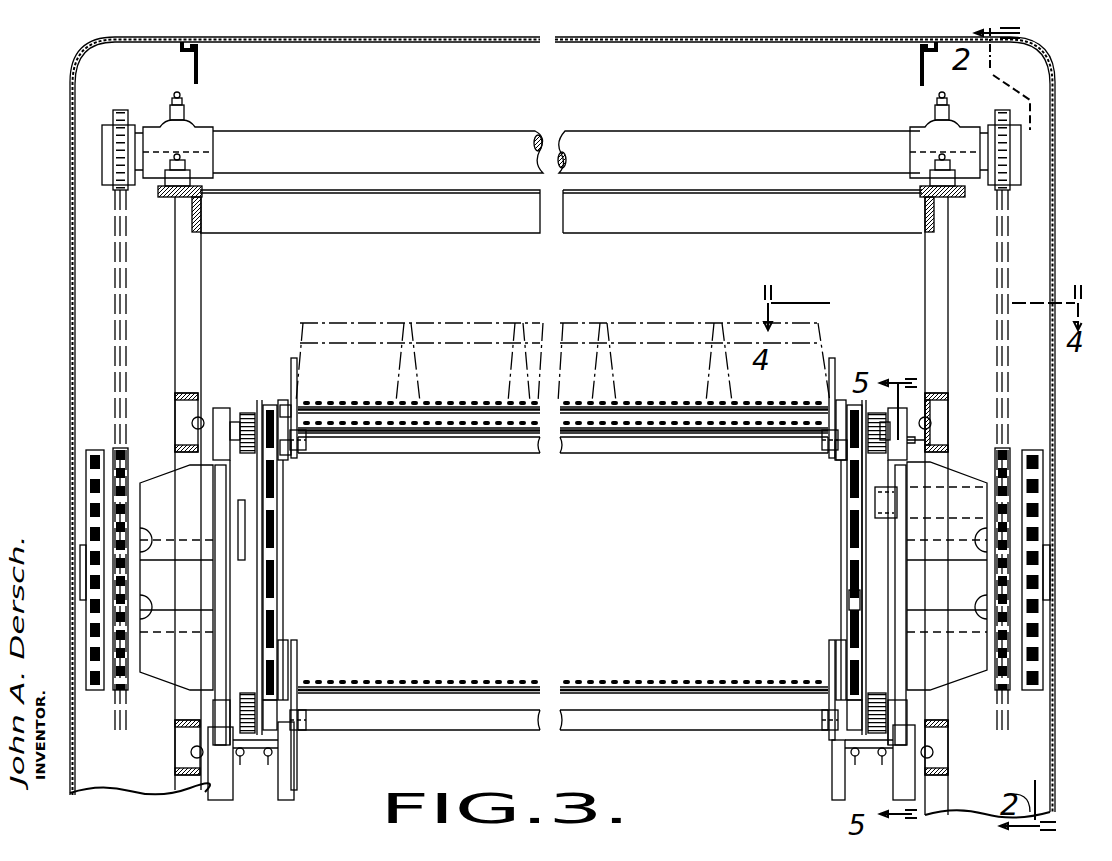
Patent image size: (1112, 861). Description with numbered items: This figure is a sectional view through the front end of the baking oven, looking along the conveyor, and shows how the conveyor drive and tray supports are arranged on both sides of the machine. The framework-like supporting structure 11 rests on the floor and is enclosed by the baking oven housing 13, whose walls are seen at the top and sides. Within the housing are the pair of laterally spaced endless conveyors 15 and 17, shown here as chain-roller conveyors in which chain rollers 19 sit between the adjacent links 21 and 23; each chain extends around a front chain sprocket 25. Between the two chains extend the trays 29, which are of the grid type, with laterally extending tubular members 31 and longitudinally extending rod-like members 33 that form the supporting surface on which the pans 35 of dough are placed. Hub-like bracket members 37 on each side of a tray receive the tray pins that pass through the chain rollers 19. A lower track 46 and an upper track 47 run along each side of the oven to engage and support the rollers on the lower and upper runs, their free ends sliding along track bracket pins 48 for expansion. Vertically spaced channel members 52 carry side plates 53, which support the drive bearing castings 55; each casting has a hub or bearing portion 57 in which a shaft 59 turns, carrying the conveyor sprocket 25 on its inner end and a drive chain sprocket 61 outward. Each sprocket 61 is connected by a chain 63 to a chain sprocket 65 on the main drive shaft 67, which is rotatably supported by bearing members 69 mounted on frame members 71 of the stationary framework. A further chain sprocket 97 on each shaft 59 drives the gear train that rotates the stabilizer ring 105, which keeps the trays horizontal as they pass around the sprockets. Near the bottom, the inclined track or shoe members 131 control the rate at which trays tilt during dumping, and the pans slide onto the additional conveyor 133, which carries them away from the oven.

The supporting structure 11 is at (170, 796).
The baking oven housing 13 is at (68, 209).
The endless conveyor 15 is at (283, 520).
The endless conveyor 17 is at (839, 565).
The chain roller 19 is at (265, 568).
The link 21 is at (275, 548).
The link 23 is at (270, 602).
The chain sprocket 25 is at (270, 620).
The tray 29 is at (452, 459).
The tubular member 31 is at (322, 443).
The rod-like member 33 is at (330, 402).
The pan 35 is at (300, 333).
The hub-like bracket member 37 is at (292, 452).
The lower track 46 is at (248, 770).
The upper track 47 is at (920, 437).
The track bracket pin 48 is at (275, 757).
The channel member 52 is at (185, 395).
The side plate 53 is at (200, 320).
The drive bearing supporting casting 55 is at (167, 689).
The hub or bearing portion 57 is at (947, 576).
The shaft 59 is at (843, 602).
The drive chain sprocket 61 is at (120, 727).
The chain 63 is at (115, 388).
The chain sprocket 65 is at (113, 114).
The main drive shaft 67 is at (810, 138).
The bearing member 69 is at (935, 180).
The frame member 71 is at (934, 222).
The chain sprocket 97 is at (88, 468).
The stabilizer ring 105 is at (895, 485).
The inclined track or shoe member 131 is at (840, 792).
The additional conveyor 133 is at (893, 785).